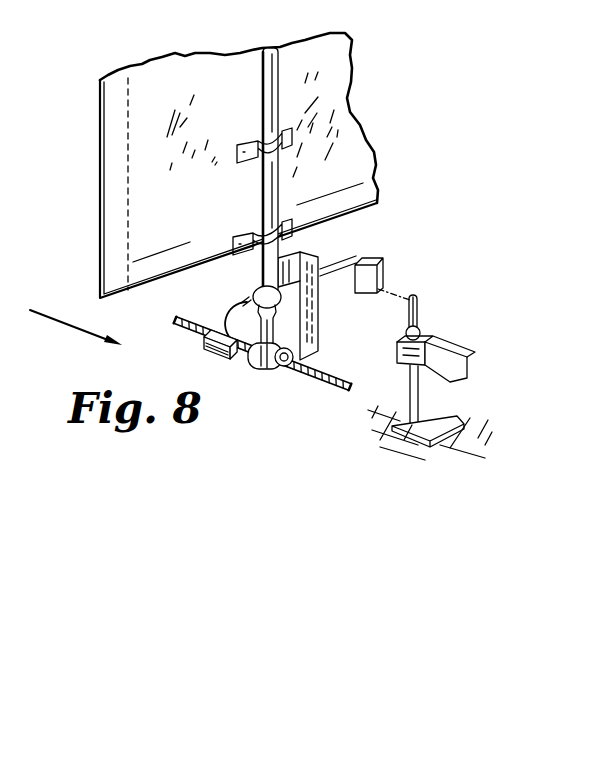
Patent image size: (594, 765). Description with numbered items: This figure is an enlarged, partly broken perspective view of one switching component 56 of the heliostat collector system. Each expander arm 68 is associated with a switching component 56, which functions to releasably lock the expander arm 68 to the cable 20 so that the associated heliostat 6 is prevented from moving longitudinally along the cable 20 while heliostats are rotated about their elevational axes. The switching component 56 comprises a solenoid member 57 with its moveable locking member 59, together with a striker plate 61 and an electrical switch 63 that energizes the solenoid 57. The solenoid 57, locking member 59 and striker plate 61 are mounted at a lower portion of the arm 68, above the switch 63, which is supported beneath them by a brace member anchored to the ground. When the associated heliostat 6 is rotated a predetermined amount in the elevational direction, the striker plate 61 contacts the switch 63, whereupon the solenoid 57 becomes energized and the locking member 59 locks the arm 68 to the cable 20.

The heliostat 6 is at (235, 111).
The cable 20 is at (342, 390).
The switching component 56 is at (464, 376).
The solenoid member 57 is at (253, 327).
The moveable locking member 59 is at (212, 345).
The striker plate 61 is at (370, 288).
The electrical switch 63 is at (466, 366).
The expander arm 68 is at (270, 338).